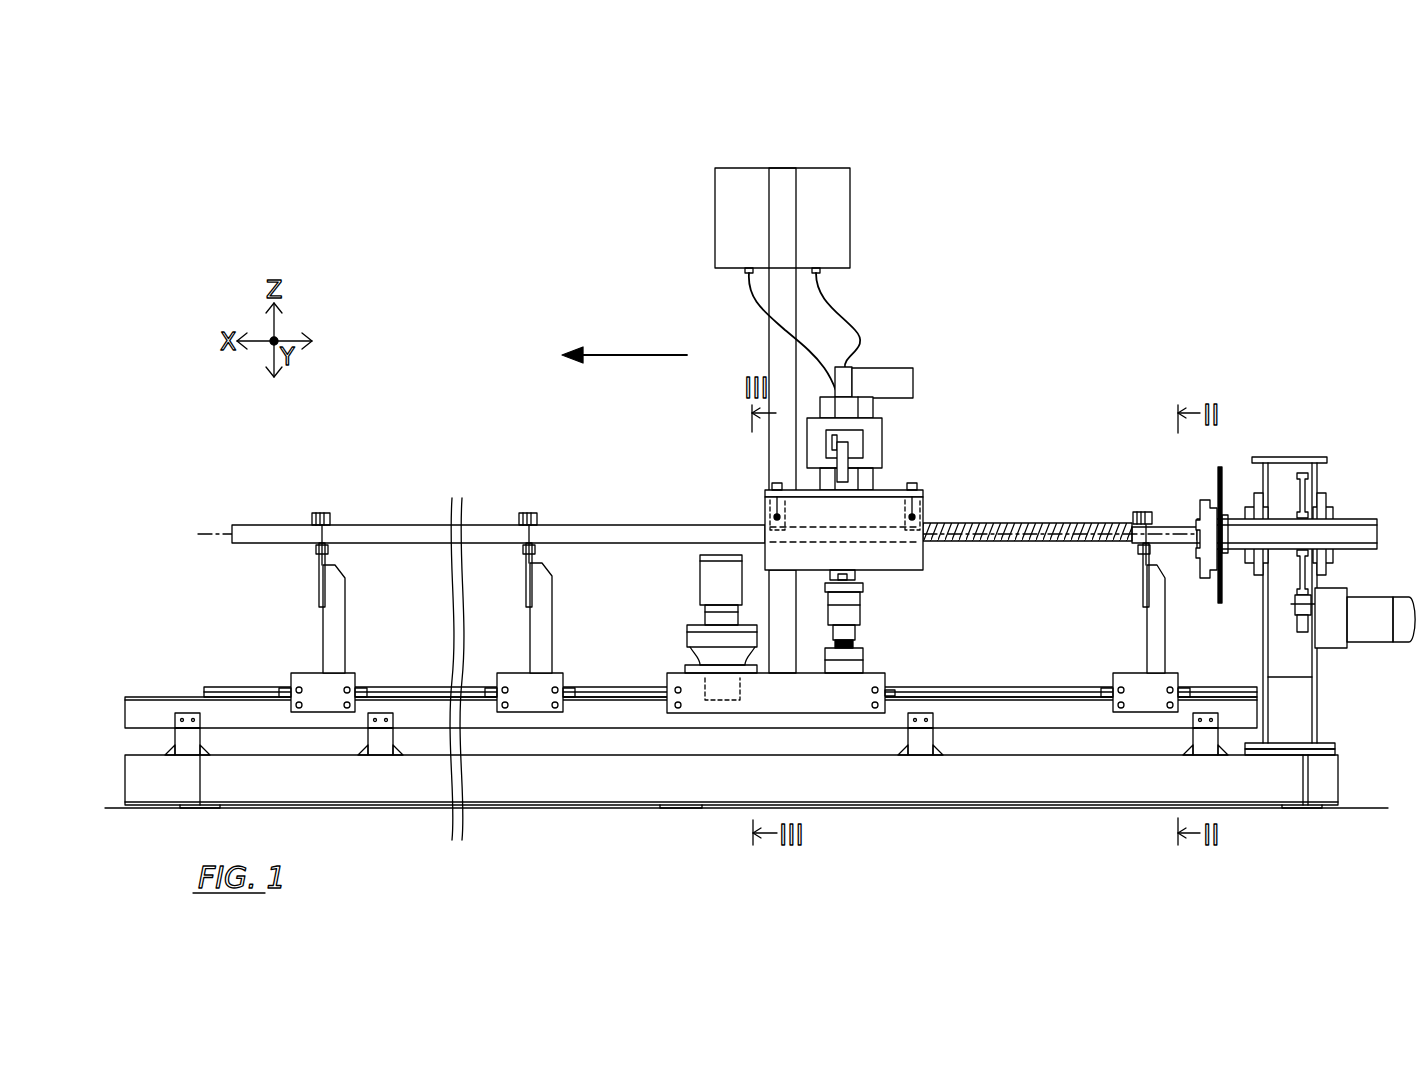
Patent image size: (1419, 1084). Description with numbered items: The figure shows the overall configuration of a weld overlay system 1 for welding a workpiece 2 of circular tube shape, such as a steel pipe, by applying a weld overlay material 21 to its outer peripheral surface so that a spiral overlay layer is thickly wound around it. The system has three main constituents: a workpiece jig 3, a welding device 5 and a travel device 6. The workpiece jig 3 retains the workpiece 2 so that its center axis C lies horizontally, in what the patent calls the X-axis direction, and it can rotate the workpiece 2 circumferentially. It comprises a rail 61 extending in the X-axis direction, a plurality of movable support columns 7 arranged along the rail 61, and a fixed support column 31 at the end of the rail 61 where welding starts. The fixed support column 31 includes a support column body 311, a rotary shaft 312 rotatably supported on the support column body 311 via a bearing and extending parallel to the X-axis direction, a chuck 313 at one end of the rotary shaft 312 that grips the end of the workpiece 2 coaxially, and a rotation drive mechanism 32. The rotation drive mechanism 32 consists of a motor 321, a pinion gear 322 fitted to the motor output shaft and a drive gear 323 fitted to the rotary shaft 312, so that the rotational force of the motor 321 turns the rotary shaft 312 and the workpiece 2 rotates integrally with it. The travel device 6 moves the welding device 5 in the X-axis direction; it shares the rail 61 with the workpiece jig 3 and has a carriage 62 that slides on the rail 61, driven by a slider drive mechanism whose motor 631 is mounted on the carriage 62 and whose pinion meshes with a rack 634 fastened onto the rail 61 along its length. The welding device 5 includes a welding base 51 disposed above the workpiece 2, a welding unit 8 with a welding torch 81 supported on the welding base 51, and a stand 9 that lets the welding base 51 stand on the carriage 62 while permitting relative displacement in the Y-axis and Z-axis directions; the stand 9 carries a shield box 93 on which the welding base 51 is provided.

The weld overlay system 1 is at (1139, 224).
The workpiece 2 is at (385, 525).
The weld overlay material 21 is at (1050, 523).
The workpiece jig 3 is at (1320, 403).
The fixed support column 31 is at (1340, 465).
The support column body 311 is at (1315, 715).
The rotary shaft 312 is at (1355, 520).
The chuck 313 is at (1205, 500).
The rotation drive mechanism 32 is at (1355, 583).
The motor 321 is at (1370, 642).
The pinion gear 322 is at (1295, 625).
The drive gear 323 is at (1300, 478).
The welding device 5 is at (918, 306).
The welding base 51 is at (889, 490).
The travel device 6 is at (655, 640).
The rail 61 is at (158, 697).
The carriage 62 is at (893, 675).
The motor 631 is at (700, 585).
The rack 634 is at (205, 688).
The movable support columns 7 is at (348, 620).
The welding unit 8 is at (937, 430).
The welding torch 81 is at (845, 510).
The stand 9 is at (863, 610).
The shield box 93 is at (923, 562).